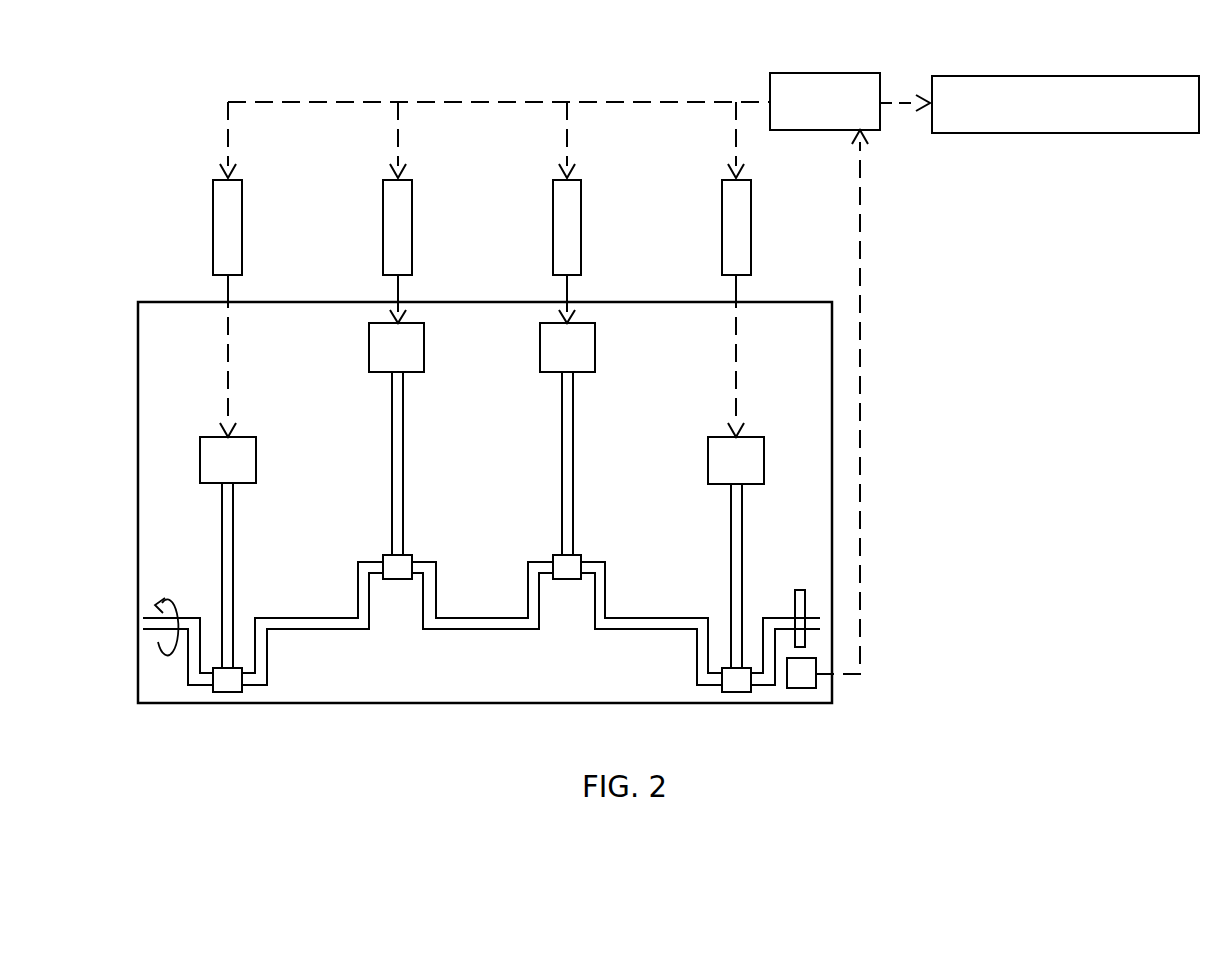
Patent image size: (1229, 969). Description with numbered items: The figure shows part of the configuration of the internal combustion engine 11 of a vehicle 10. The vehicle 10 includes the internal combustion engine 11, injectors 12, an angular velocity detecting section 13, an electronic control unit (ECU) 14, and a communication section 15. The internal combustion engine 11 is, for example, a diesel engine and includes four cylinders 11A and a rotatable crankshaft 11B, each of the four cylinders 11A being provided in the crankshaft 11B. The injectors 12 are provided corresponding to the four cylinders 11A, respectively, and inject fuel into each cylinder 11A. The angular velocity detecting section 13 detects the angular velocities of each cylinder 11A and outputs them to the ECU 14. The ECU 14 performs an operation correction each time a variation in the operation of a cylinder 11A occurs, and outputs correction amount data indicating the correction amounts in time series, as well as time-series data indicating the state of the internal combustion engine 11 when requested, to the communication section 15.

The vehicle 10 is at (186, 79).
The internal combustion engine 11 is at (790, 301).
The cylinder 11A is at (256, 462).
The crankshaft 11B is at (645, 617).
The injector 12 is at (242, 232).
The angular velocity detecting section 13 is at (816, 682).
The electronic control unit (ECU) 14 is at (822, 73).
The communication section 15 is at (1162, 76).